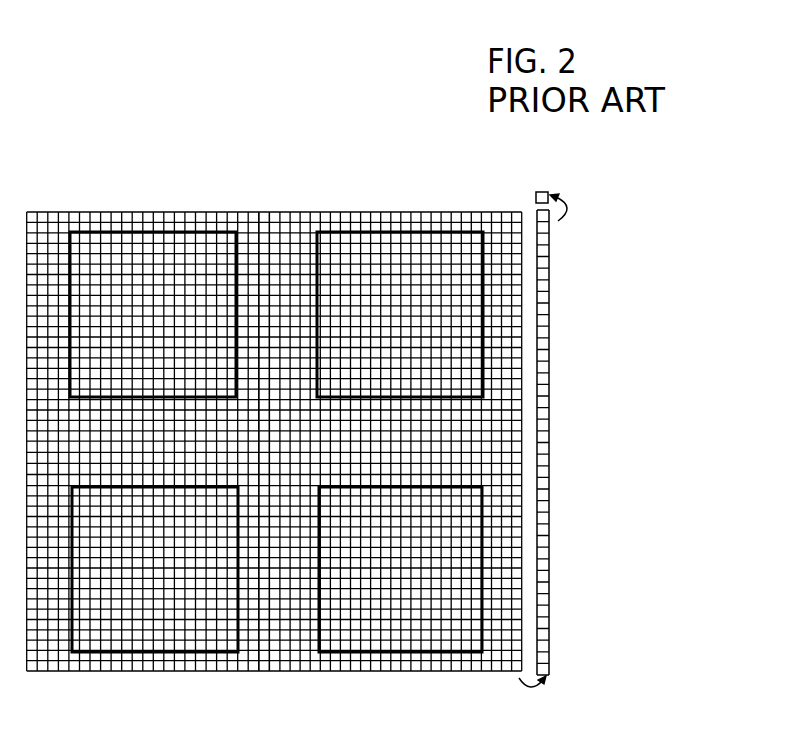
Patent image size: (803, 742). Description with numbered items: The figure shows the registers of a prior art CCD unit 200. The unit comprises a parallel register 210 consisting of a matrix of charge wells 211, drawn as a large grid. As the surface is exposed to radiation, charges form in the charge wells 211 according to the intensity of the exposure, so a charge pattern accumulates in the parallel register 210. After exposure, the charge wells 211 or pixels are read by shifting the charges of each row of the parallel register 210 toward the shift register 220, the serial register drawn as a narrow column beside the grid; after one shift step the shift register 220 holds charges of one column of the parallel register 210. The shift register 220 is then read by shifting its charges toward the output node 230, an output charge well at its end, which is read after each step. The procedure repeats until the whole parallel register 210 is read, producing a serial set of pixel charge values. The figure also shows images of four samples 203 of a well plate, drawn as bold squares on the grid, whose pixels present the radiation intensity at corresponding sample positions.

The CCD unit 200 is at (640, 444).
The parallel register 210 is at (138, 178).
The samples of a well plate 203 is at (158, 231).
The charge wells 211 is at (258, 213).
The shift register 220 is at (555, 305).
The output node 230 is at (528, 190).